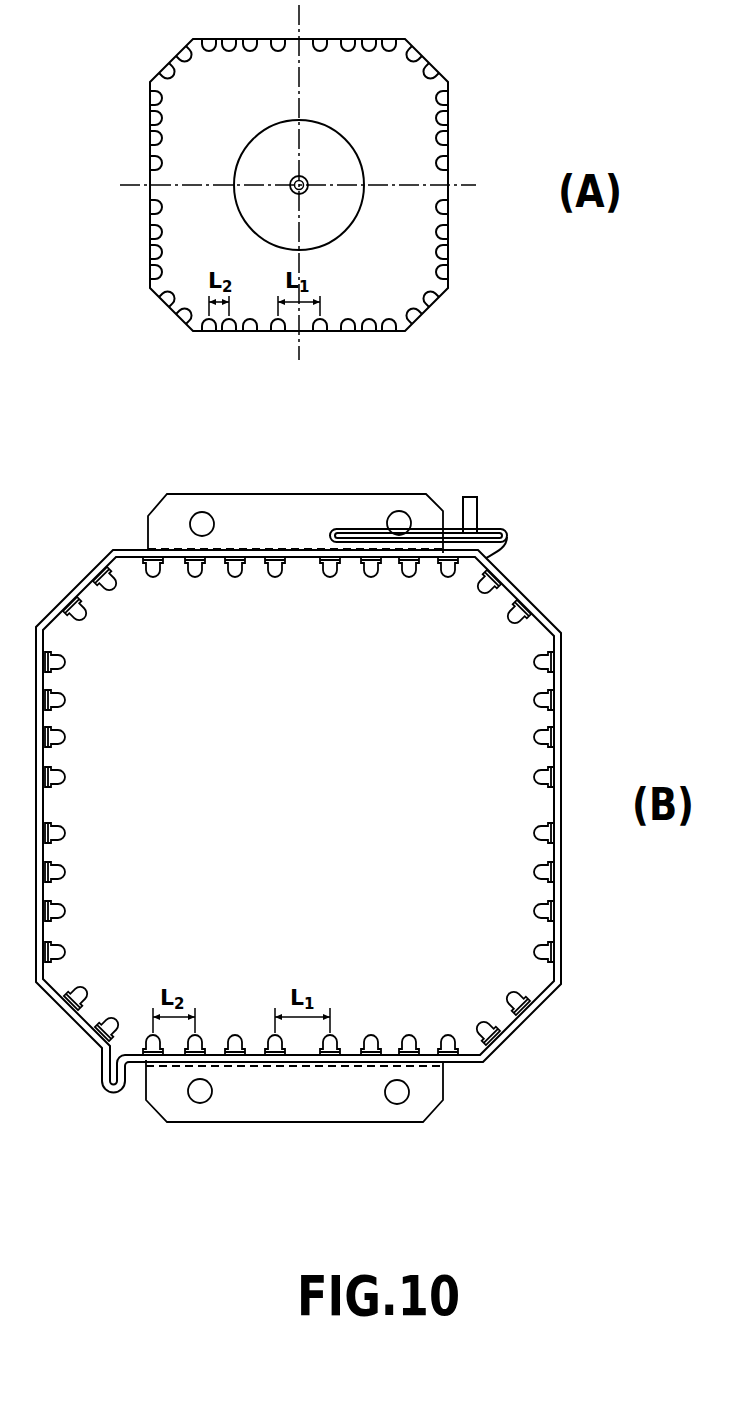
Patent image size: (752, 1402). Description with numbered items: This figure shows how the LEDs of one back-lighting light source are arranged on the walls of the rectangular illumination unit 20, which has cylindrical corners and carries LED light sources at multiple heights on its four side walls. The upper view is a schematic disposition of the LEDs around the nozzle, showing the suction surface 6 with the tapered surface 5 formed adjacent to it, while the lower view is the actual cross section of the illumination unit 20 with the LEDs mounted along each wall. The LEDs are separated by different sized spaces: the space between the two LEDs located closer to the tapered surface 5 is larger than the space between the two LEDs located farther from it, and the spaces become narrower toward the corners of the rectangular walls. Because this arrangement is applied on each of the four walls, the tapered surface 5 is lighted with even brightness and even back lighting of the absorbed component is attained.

The tapered surface 5 is at (331, 136).
The suction surface 6 is at (296, 178).
The illumination unit 20 is at (561, 690).